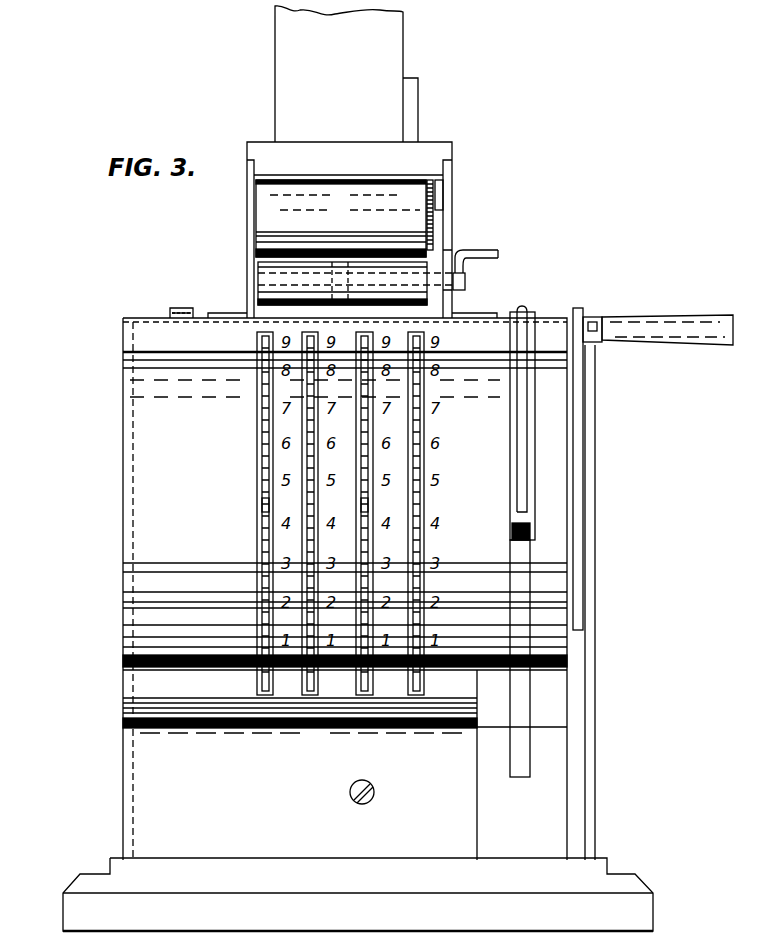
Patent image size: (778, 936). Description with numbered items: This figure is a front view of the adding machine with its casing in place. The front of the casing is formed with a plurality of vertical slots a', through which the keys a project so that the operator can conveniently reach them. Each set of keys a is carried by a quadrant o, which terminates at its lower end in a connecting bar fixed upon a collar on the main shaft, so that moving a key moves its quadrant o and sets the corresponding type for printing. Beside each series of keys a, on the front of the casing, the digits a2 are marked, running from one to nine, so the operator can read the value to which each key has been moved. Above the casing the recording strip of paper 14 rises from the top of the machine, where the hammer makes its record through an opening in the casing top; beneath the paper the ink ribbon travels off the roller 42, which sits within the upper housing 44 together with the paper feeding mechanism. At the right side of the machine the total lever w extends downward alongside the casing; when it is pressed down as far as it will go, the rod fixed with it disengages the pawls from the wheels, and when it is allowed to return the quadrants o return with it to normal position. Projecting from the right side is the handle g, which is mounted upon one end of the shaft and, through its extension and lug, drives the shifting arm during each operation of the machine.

The recording strip of paper 14 is at (346, 74).
The printing housing 44 is at (435, 148).
The roller 42 is at (265, 277).
The keys a is at (256, 513).
The quadrant o is at (265, 505).
The slots a' is at (287, 602).
The digits a2 is at (280, 563).
The total lever w is at (520, 423).
The handle g is at (660, 362).